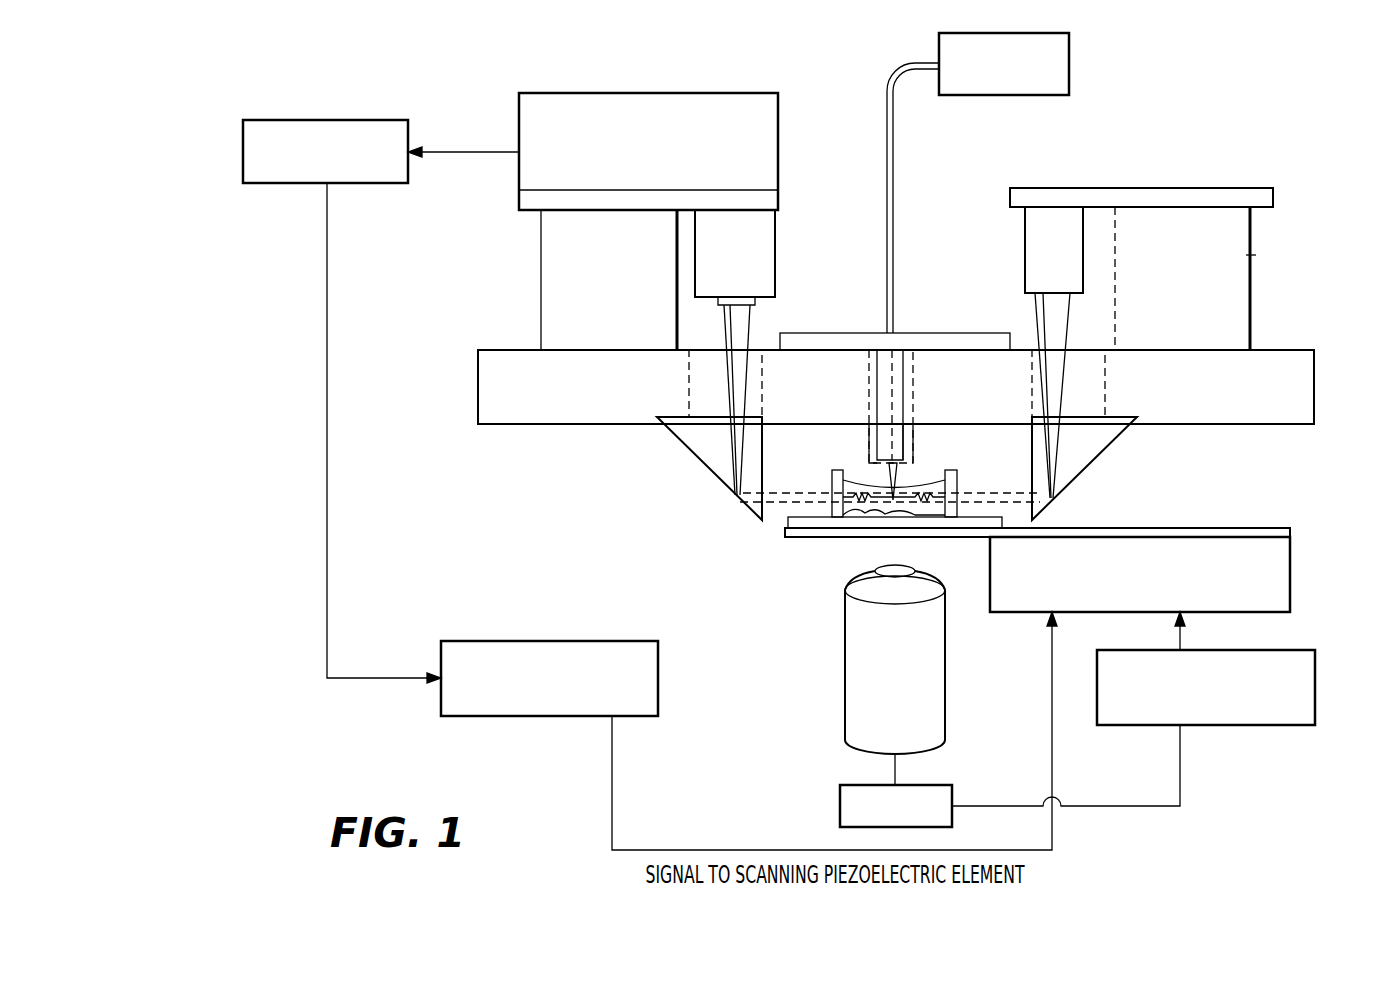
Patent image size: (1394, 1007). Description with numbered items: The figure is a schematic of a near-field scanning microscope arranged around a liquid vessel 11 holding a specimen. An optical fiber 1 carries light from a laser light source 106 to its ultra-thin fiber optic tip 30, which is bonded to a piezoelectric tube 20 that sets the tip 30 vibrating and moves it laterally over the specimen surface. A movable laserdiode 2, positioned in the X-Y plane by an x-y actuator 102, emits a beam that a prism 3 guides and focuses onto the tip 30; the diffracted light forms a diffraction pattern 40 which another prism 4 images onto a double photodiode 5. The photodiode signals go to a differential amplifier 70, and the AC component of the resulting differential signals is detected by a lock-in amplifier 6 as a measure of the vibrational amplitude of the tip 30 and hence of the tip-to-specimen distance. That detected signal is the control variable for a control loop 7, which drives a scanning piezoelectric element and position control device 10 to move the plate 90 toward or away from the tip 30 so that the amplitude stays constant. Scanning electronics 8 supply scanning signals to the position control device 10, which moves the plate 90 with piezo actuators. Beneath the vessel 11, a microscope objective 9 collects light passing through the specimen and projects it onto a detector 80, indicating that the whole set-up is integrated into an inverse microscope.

The optical fiber 1 is at (881, 494).
The laserdiode 2 is at (1045, 224).
The prism 3 is at (1090, 463).
The prism 4 is at (712, 471).
The double photodiode 5 is at (718, 309).
The lock-in amplifier 6 is at (335, 120).
The control loop 7 is at (548, 641).
The scanning electronics 8 is at (1315, 692).
The microscope objective 9 is at (887, 678).
The scanning piezoelectric element and position control device 10 is at (1290, 545).
The liquid vessel 11 is at (957, 482).
The piezoelectric tube 20 is at (869, 440).
The fiber optic tip 30 is at (895, 482).
The diffraction pattern 40 is at (781, 493).
The differential amplifier 70 is at (779, 128).
The detector 80 is at (952, 796).
The plate 90 is at (788, 533).
The x-y actuator 102 is at (541, 265).
The laser light source 106 is at (1069, 67).